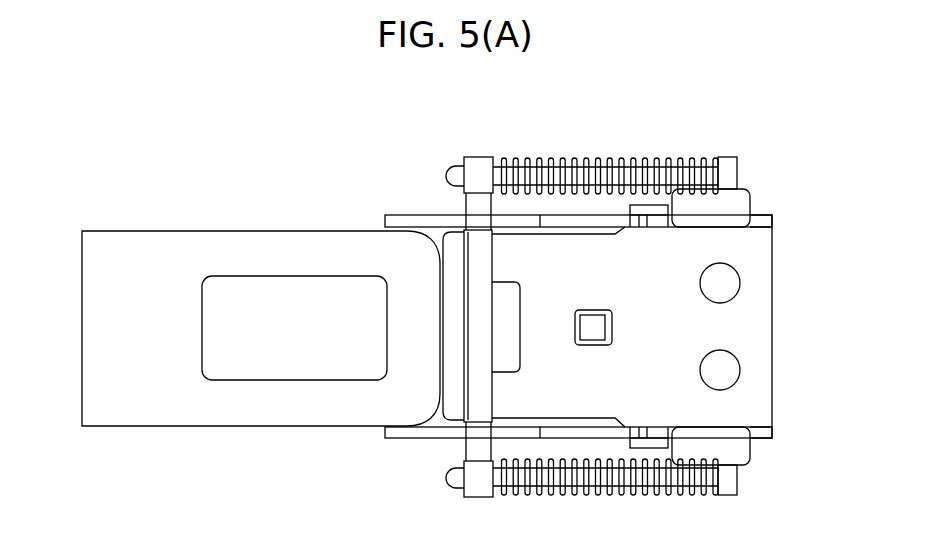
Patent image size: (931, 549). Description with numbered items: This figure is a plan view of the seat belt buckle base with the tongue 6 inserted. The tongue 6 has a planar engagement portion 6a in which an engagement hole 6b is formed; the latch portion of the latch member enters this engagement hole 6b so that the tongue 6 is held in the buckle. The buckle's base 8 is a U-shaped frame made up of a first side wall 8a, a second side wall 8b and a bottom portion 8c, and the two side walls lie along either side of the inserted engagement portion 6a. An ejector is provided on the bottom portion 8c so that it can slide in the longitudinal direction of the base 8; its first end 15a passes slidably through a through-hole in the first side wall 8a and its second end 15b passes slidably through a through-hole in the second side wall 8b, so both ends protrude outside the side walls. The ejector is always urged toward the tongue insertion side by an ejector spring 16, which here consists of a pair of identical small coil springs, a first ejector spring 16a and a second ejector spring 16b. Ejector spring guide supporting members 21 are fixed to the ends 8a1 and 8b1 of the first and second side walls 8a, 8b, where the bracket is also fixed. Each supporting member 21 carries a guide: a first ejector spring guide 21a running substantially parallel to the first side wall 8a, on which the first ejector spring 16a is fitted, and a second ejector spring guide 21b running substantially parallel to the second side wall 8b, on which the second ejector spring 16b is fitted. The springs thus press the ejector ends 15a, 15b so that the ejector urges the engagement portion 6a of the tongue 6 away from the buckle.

The tongue 6 is at (261, 298).
The engagement portion 6a is at (235, 231).
The engagement hole 6b is at (204, 329).
The base 8 is at (611, 327).
The first side wall 8a is at (453, 480).
The end of first side wall 8a1 is at (762, 430).
The second side wall 8b is at (398, 216).
The end of second side wall 8b1 is at (762, 218).
The bottom portion 8c is at (762, 287).
The first end of ejector 15a is at (481, 491).
The second end of ejector 15b is at (478, 168).
The ejector spring 16 is at (615, 317).
The first ejector spring 16a is at (615, 502).
The second ejector spring 16b is at (615, 148).
The ejector spring guide supporting members 21 is at (747, 192).
The first ejector spring guide 21a is at (595, 486).
The second ejector spring guide 21b is at (558, 170).